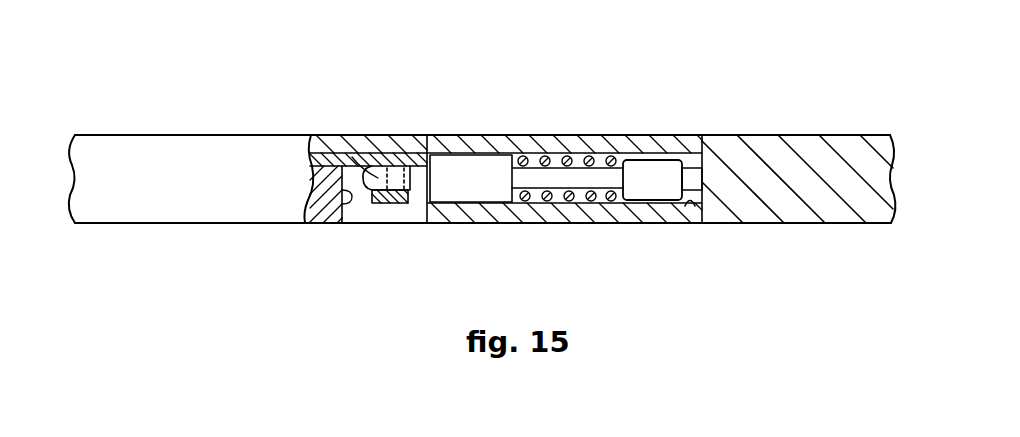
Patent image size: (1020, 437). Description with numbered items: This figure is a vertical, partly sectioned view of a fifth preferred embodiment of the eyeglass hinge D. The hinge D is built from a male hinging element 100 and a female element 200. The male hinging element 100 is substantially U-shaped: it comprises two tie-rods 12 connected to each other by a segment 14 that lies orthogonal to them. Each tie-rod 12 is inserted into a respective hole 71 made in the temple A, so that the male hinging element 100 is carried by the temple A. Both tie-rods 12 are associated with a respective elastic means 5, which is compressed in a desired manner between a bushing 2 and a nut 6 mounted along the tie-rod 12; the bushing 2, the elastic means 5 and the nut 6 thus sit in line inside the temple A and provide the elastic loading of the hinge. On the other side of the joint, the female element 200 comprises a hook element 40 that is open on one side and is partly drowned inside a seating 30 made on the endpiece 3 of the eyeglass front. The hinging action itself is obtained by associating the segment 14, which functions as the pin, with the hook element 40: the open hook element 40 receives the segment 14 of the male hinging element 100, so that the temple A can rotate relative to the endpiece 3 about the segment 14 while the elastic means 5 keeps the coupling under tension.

The endpiece 3 is at (143, 143).
The segment 14 is at (345, 155).
The hinge D is at (414, 108).
The bushing 2 is at (453, 165).
The elastic means 5 is at (528, 150).
The male hinging element 100 is at (588, 136).
The nut 6 is at (663, 165).
The temple A is at (823, 150).
The seating 30 is at (322, 227).
The hook element 40 is at (400, 196).
The female element 200 is at (382, 235).
The tie-rod 12 is at (573, 180).
The hole 71 is at (692, 202).